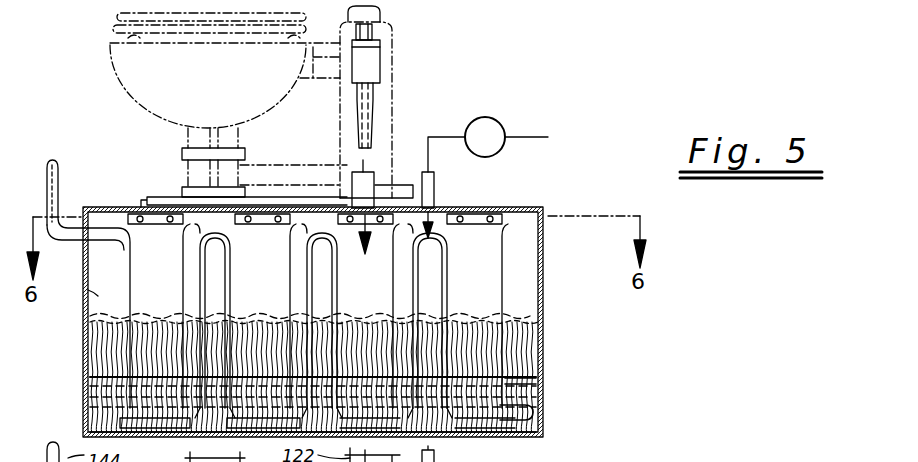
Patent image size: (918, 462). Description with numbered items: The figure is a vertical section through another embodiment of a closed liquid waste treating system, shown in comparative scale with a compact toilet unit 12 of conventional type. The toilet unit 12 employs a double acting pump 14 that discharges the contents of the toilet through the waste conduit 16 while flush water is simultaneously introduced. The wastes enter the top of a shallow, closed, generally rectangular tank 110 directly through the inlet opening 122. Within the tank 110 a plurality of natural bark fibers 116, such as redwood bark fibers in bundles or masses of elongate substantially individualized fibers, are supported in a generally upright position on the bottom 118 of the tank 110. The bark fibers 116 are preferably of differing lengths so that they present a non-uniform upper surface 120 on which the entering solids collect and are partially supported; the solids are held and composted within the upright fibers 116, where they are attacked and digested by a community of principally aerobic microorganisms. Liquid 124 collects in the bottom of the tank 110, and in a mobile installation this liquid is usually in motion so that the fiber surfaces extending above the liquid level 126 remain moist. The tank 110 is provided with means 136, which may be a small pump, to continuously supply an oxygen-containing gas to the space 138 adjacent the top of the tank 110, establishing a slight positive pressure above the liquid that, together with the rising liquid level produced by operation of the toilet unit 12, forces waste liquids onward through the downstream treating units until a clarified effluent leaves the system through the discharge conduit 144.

The toilet unit 12 is at (112, 86).
The double acting pump 14 is at (392, 118).
The waste conduit 16 is at (366, 30).
The tank 110 is at (525, 207).
The bark fibers 116 is at (530, 360).
The bottom 118 is at (510, 432).
The upper surface 120 is at (510, 312).
The inlet opening 122 is at (352, 186).
The liquid 124 is at (95, 403).
The liquid level 126 is at (525, 368).
The gas supply means 136 is at (482, 128).
The space 138 is at (100, 295).
The discharge conduit 144 is at (58, 185).